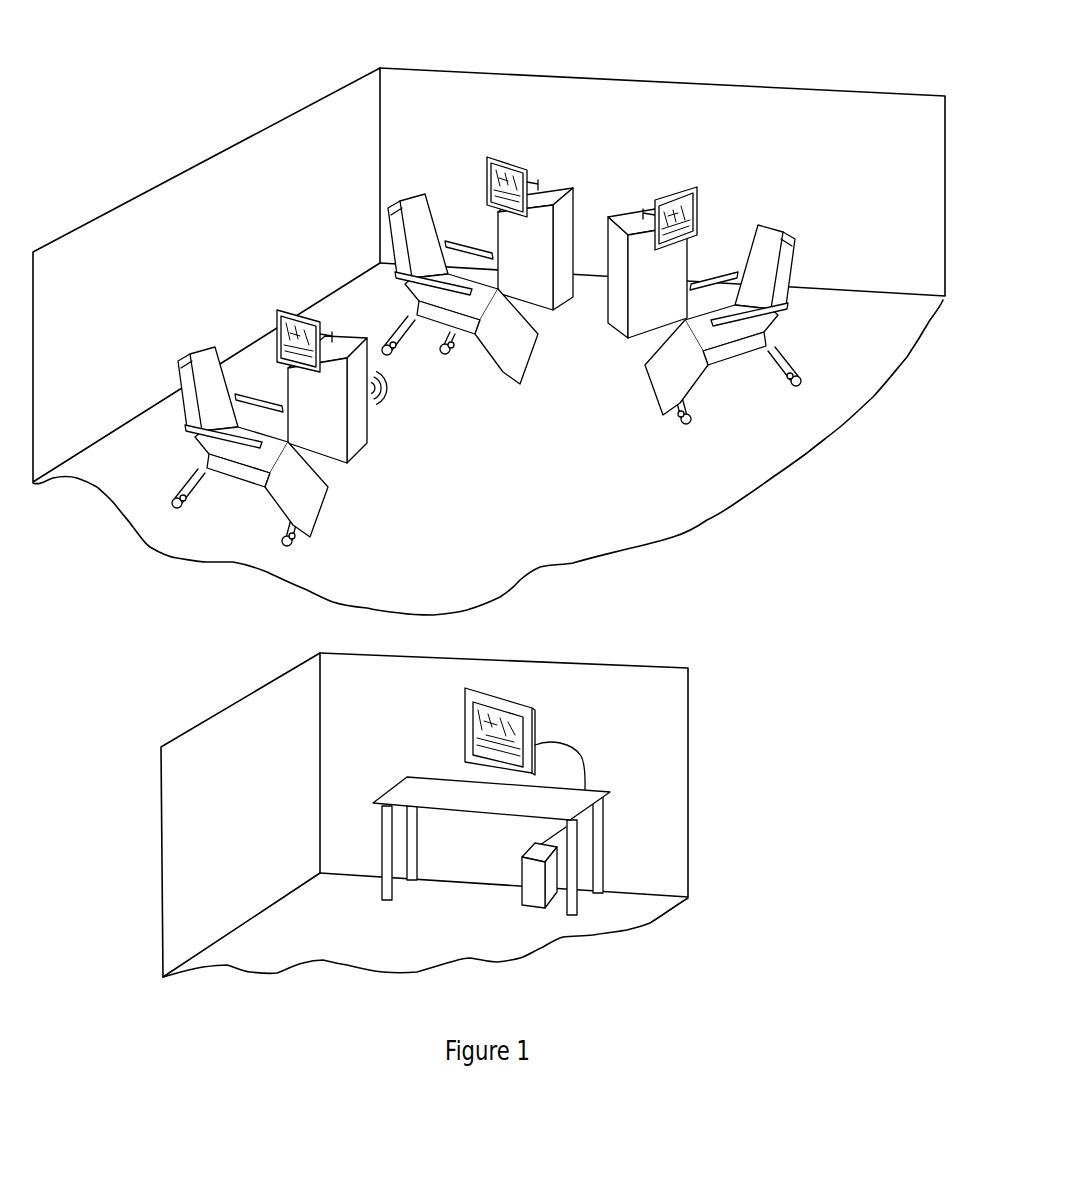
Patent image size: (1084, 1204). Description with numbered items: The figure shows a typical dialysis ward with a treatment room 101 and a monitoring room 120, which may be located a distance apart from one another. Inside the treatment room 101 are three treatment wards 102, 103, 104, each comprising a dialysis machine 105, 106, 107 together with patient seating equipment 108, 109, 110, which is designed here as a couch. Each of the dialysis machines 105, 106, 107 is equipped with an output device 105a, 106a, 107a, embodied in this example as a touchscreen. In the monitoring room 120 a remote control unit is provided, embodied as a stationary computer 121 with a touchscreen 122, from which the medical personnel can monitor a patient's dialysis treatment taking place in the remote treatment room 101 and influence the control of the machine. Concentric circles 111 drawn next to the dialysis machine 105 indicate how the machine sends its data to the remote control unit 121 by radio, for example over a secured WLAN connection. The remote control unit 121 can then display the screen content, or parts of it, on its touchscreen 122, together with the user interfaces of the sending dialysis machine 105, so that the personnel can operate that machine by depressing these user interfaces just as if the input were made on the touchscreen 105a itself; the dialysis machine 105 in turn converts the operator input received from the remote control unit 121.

The treatment room 101 is at (628, 37).
The treatment ward 102 is at (193, 323).
The treatment ward 103 is at (417, 180).
The treatment ward 104 is at (787, 198).
The dialysis machine 105 is at (383, 438).
The output device 105a is at (275, 309).
The dialysis machine 106 is at (580, 185).
The output device 106a is at (480, 165).
The dialysis machine 107 is at (607, 334).
The output device 107a is at (725, 167).
The patient seating equipment 108 is at (176, 381).
The patient seating equipment 109 is at (385, 242).
The patient seating equipment 110 is at (799, 311).
The concentric circles 111 is at (409, 398).
The monitoring room 120 is at (663, 645).
The remote control unit 121 is at (517, 899).
The touchscreen 122 is at (459, 746).